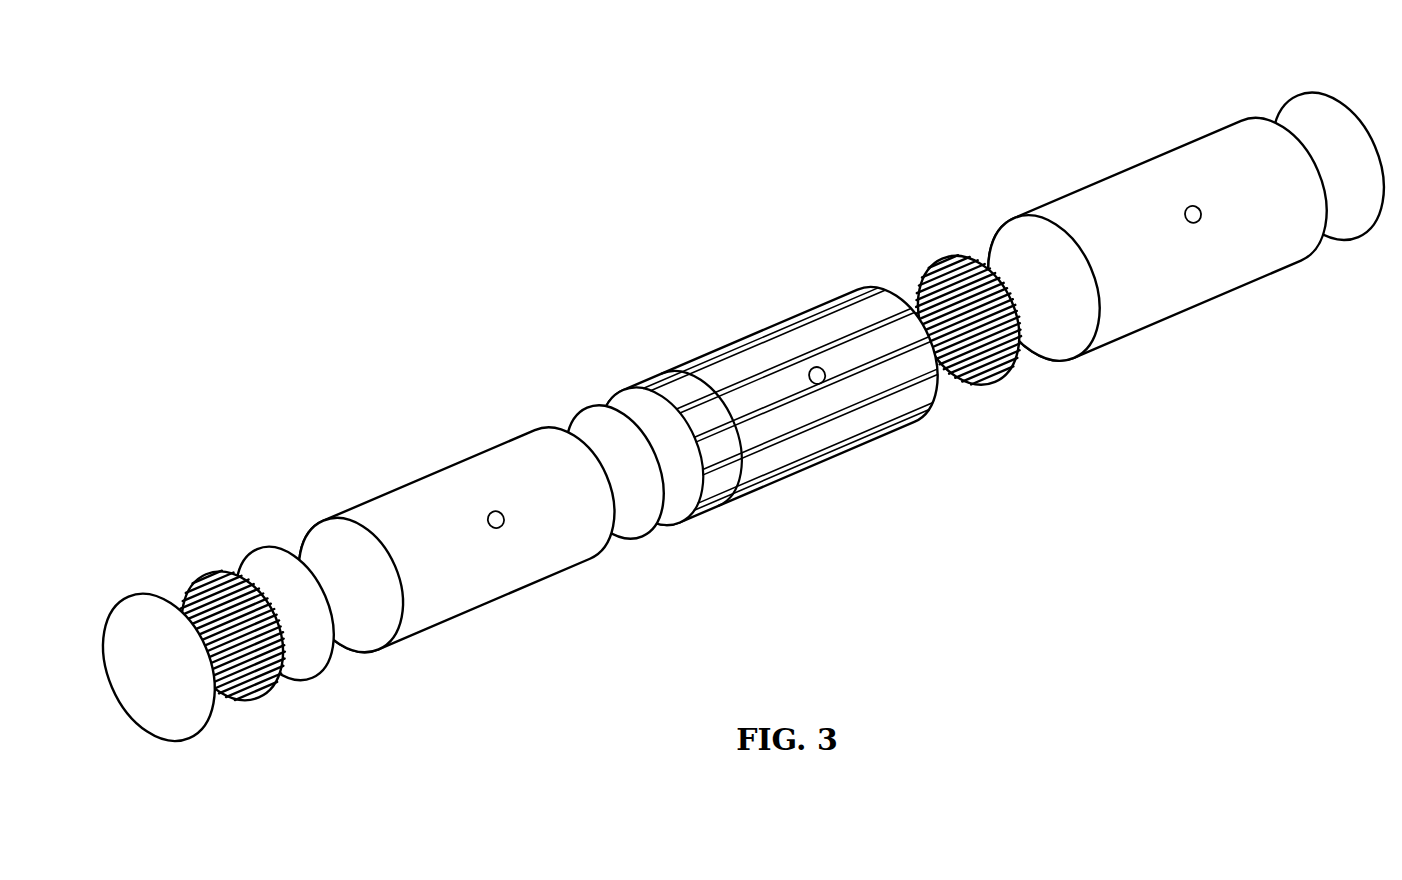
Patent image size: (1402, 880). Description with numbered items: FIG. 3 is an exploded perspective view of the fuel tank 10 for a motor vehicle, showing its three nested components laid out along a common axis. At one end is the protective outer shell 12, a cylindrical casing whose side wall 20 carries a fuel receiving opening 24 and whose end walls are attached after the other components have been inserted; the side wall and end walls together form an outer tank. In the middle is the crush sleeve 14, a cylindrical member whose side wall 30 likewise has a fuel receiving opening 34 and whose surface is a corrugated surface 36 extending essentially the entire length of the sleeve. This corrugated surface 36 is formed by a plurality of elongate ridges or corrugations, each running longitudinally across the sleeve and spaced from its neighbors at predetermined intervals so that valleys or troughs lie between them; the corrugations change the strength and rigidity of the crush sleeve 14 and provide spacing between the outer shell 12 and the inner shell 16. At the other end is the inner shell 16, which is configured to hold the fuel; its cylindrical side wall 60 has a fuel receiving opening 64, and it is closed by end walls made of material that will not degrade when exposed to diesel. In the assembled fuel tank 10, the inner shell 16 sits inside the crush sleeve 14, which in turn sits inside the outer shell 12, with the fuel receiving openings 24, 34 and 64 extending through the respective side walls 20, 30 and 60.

The fuel tank 10 is at (757, 168).
The protective outer shell 12 is at (1157, 223).
The crush sleeve 14 is at (769, 387).
The inner shell 16 is at (456, 536).
The side wall 20 is at (1200, 287).
The fuel receiving opening 24 is at (1192, 204).
The side wall 30 is at (811, 423).
The fuel receiving opening 34 is at (818, 367).
The corrugated surface 36 is at (712, 382).
The side wall 60 is at (453, 600).
The fuel receiving opening 64 is at (502, 515).